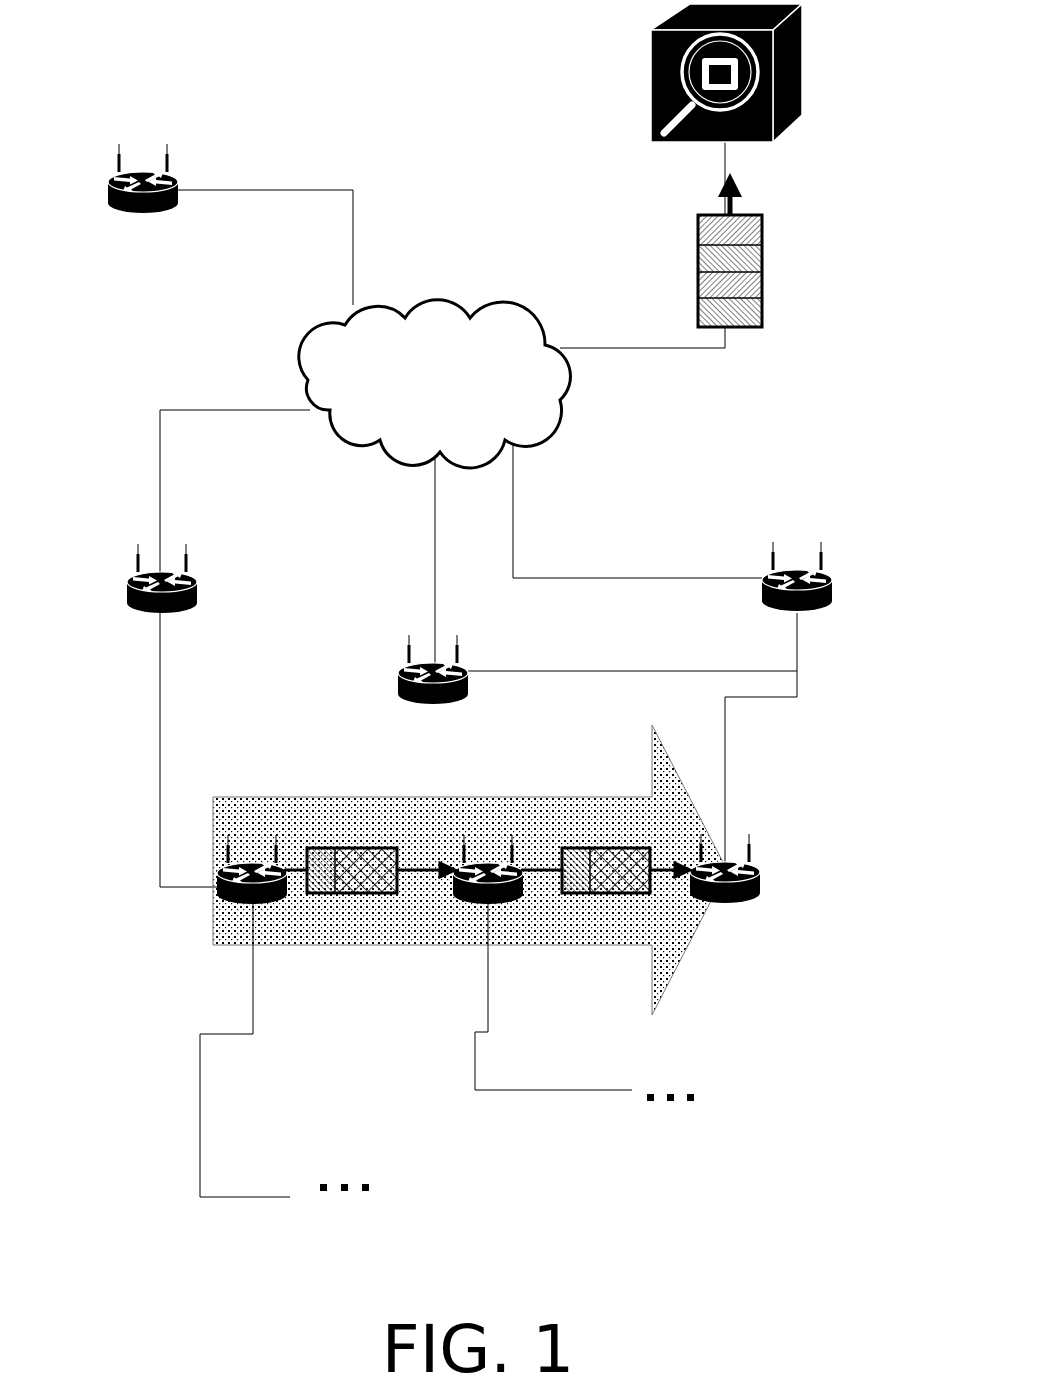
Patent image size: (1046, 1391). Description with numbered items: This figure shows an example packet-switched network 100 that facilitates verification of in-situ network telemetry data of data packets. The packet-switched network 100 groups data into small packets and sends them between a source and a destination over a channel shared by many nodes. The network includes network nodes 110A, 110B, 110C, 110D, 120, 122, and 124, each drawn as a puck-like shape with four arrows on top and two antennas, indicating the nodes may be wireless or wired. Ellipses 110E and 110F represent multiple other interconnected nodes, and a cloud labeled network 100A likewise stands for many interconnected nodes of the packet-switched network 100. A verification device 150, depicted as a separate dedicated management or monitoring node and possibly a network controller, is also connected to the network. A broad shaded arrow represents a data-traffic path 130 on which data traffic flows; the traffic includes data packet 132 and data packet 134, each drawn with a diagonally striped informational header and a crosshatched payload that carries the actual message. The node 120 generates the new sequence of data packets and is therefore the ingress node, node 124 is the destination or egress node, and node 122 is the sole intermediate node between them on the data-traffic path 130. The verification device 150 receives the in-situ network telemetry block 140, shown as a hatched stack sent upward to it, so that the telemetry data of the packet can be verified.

The packet-switched network 100 is at (212, 30).
The network 100A is at (435, 384).
The network node 110A is at (143, 215).
The network node 110B is at (114, 608).
The network node 110C is at (827, 554).
The network node 110D is at (464, 644).
The ellipse 110E is at (336, 1137).
The ellipse 110F is at (642, 1141).
The ingress node 120 is at (192, 903).
The intermediate node 122 is at (447, 929).
The egress node 124 is at (784, 903).
The data-traffic path 130 is at (394, 884).
The data packet 132 is at (607, 847).
The data packet 134 is at (352, 847).
The in-situ network telemetry block 140 is at (762, 287).
The verification device 150 is at (805, 72).